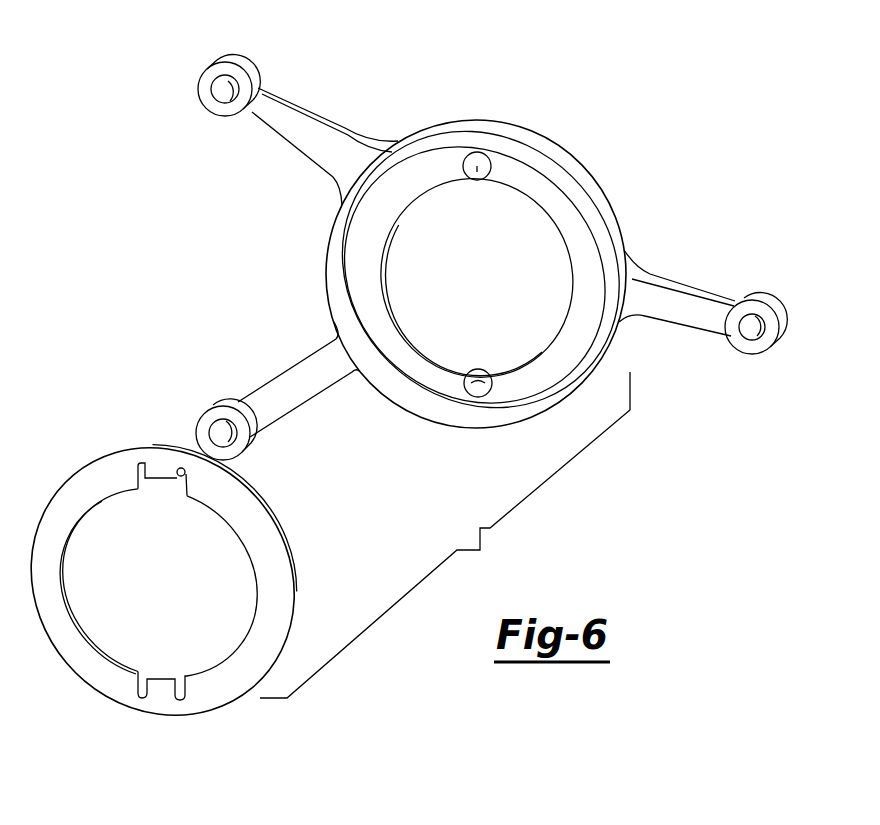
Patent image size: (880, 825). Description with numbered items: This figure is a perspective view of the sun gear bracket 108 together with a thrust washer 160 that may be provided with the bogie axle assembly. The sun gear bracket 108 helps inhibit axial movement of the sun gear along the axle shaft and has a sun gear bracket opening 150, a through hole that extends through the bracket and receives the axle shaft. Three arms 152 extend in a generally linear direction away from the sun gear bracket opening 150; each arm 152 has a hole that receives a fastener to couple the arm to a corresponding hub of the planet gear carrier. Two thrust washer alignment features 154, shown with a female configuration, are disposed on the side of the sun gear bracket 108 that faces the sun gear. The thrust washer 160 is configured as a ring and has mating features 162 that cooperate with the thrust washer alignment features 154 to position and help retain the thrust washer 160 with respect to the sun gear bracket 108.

The sun gear bracket 108 is at (530, 143).
The sun gear bracket opening 150 is at (495, 285).
The arm 152 is at (296, 120).
The thrust washer alignment feature 154 is at (475, 172).
The thrust washer 160 is at (262, 488).
The mating feature 162 is at (162, 480).